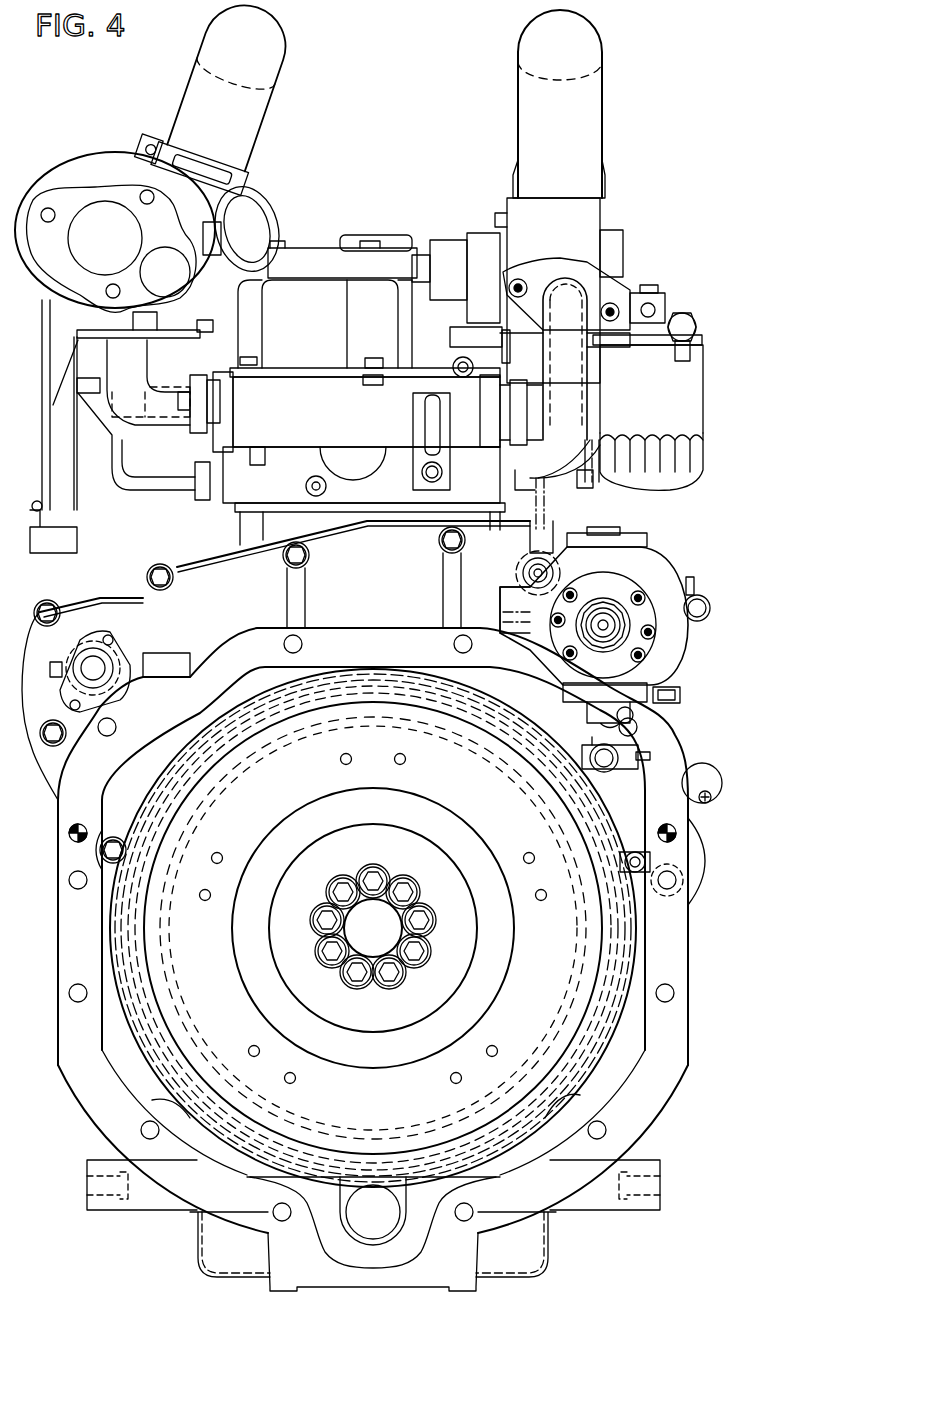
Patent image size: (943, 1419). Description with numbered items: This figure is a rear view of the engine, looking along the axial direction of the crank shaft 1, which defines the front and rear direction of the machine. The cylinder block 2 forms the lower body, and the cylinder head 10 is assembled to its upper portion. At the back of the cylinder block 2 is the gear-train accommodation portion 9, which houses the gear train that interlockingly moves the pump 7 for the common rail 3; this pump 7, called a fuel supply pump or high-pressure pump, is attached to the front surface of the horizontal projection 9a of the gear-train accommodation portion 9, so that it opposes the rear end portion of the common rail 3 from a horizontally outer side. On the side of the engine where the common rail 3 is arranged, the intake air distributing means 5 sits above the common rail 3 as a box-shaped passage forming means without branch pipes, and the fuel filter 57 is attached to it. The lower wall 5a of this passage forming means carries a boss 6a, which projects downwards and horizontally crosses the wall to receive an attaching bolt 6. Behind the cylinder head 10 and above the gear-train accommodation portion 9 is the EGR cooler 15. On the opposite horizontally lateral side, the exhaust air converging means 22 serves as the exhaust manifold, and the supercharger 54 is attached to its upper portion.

The crank shaft 1 is at (387, 931).
The cylinder block 2 is at (683, 743).
The common rail 3 is at (517, 574).
The intake air distributing means 5 is at (537, 353).
The lower wall 5a is at (558, 457).
The attaching bolt 6 is at (583, 483).
The boss 6a is at (517, 475).
The pump 7 is at (663, 657).
The gear-train accommodation portion 9 is at (705, 583).
The horizontal projection 9a is at (657, 572).
The cylinder head 10 is at (392, 480).
The EGR cooler 15 is at (366, 410).
The exhaust air converging means 22 is at (200, 367).
The supercharger 54 is at (83, 172).
The fuel filter 57 is at (682, 388).